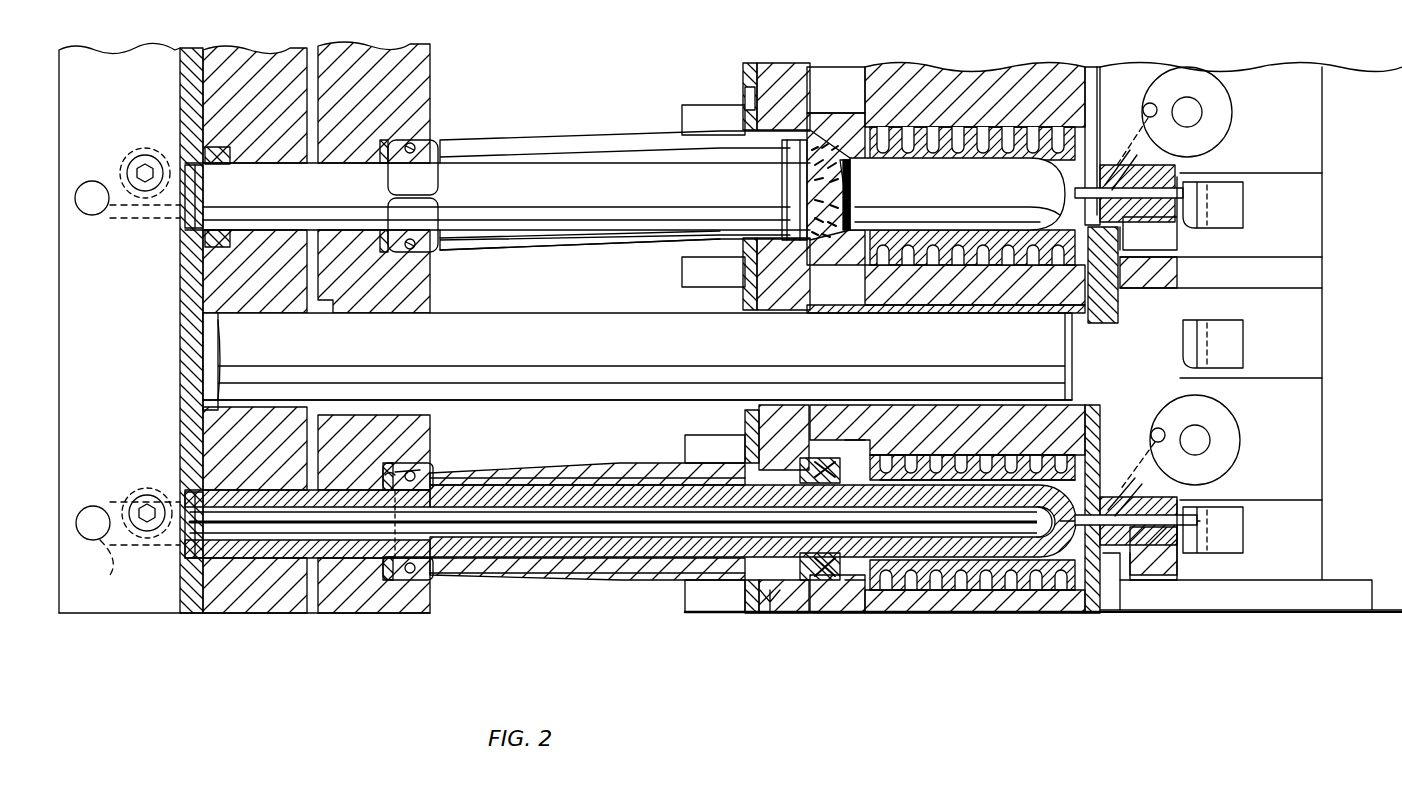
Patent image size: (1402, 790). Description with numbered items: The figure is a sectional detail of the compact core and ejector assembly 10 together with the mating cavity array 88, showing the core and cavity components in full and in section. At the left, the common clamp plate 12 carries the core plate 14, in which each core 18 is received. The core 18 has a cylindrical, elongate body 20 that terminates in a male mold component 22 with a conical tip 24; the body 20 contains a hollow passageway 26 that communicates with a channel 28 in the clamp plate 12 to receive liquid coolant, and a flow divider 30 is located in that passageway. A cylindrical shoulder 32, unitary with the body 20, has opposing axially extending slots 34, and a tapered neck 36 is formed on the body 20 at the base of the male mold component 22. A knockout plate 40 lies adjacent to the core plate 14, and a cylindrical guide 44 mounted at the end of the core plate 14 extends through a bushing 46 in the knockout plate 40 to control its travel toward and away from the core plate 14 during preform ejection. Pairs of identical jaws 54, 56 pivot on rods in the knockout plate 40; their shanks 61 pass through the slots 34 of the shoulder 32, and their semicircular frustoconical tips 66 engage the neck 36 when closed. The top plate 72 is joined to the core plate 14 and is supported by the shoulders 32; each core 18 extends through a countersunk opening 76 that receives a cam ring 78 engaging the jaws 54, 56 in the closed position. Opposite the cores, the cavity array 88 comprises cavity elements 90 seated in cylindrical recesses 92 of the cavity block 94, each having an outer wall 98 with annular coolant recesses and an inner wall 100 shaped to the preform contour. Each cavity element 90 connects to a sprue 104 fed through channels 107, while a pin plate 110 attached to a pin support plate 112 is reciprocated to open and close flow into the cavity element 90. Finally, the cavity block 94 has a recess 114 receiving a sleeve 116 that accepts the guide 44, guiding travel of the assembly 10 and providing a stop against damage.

The compact core and ejector assembly 10 is at (624, 72).
The clamp plate 12 is at (138, 613).
The core plate 14 is at (250, 613).
The core 18 is at (510, 160).
The body 20 is at (572, 490).
The male mold component 22 is at (940, 613).
The conical tip 24 is at (1012, 600).
The hollow passageway 26 is at (530, 540).
The channel 28 is at (96, 540).
The flow divider 30 is at (455, 580).
The cylindrical shoulder 32 is at (705, 118).
The slots 34 is at (695, 612).
The tapered neck 36 is at (772, 612).
The knockout plate 40 is at (420, 90).
The cylindrical guide 44 is at (490, 330).
The bushing 46 is at (420, 300).
The jaw 54 is at (646, 254).
The jaw 56 is at (624, 123).
The shank 61 is at (522, 470).
The frustoconical tip 66 is at (825, 455).
The top plate 72 is at (798, 80).
The opening 76 is at (800, 125).
The cam ring 78 is at (748, 120).
The cavity array 88 is at (972, 630).
The cavity element 90 is at (845, 613).
The cylindrical recess 92 is at (935, 430).
The cavity block 94 is at (915, 80).
The outer wall 98 is at (1000, 430).
The inner wall 100 is at (1012, 430).
The sprue 104 is at (1095, 613).
The channel 107 is at (1120, 470).
The pin plate 110 is at (1195, 580).
The pin support plate 112 is at (1233, 580).
The recess 114 is at (895, 432).
The sleeve 116 is at (884, 308).